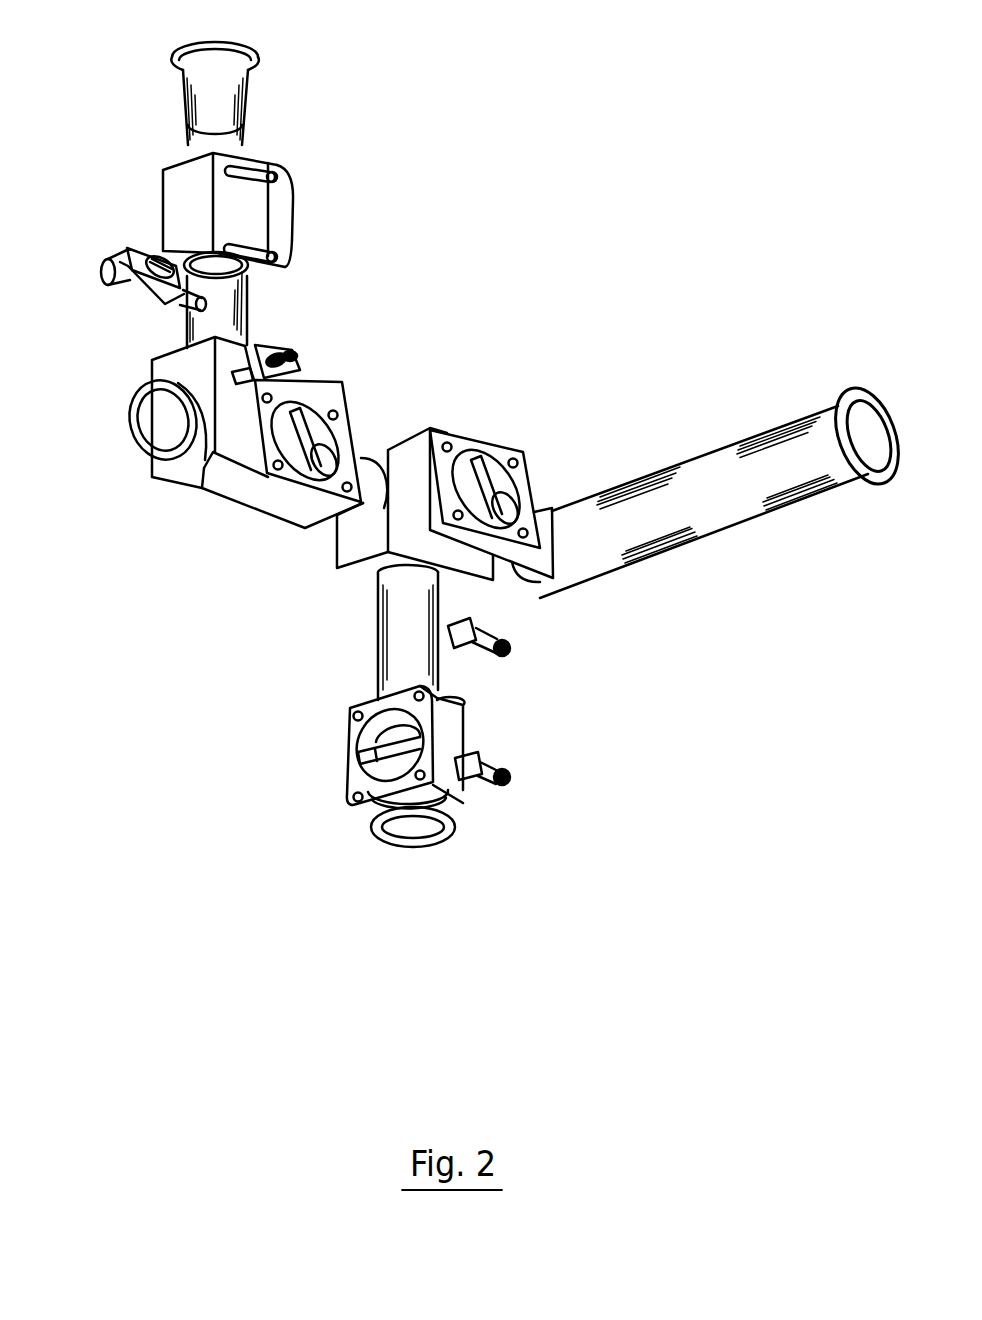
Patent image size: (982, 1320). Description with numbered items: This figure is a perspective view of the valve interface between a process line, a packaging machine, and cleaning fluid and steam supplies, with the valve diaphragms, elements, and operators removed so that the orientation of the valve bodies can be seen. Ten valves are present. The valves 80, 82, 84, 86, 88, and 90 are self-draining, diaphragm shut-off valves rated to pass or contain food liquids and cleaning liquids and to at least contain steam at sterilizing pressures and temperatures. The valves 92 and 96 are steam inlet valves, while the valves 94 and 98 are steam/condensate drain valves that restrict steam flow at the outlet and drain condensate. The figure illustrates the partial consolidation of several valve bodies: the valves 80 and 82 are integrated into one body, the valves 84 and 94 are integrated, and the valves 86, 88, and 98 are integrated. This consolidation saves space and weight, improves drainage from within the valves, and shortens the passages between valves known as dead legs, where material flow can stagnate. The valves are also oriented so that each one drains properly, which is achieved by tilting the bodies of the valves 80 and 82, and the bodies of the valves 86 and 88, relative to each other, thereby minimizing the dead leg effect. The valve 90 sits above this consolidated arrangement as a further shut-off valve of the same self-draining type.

The valve 80 is at (670, 467).
The valve 82 is at (345, 564).
The valve 84 is at (327, 806).
The valve 86 is at (277, 480).
The valve 88 is at (186, 459).
The valve 90 is at (179, 195).
The steam inlet valve 92 is at (533, 678).
The steam/condensate drain valve 94 is at (536, 812).
The steam inlet valve 96 is at (120, 317).
The steam/condensate drain valve 98 is at (310, 340).